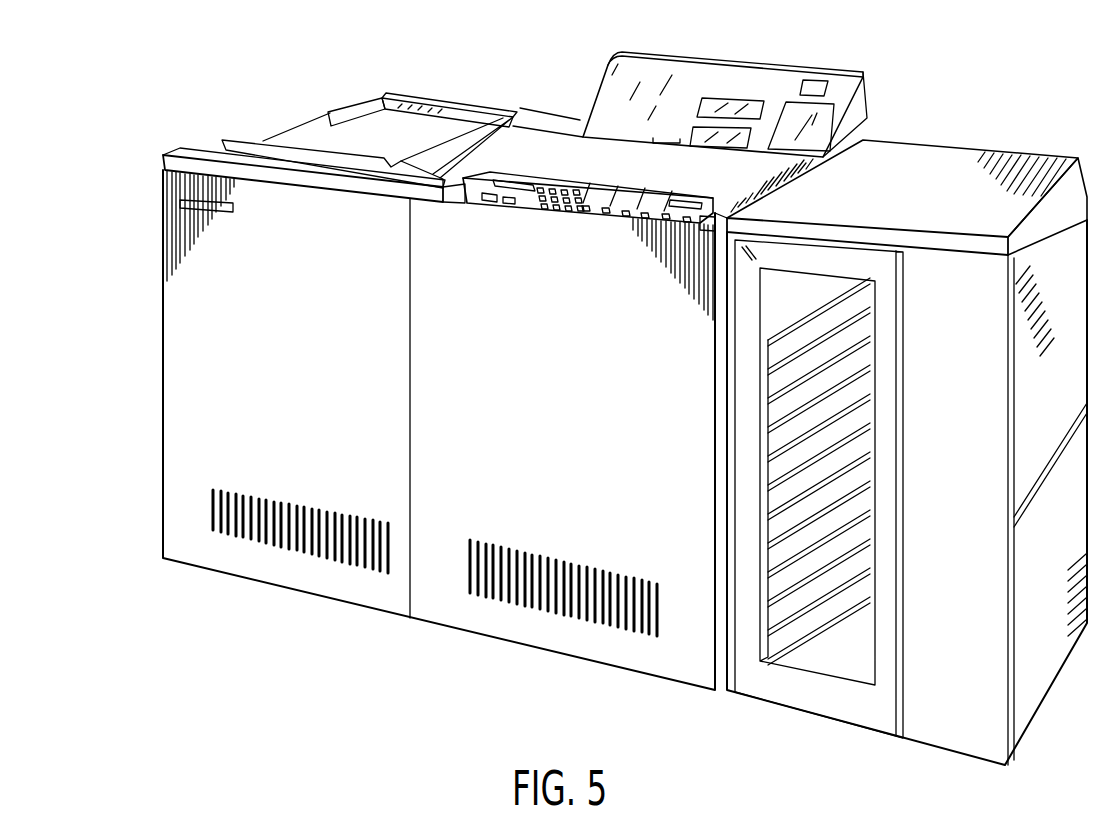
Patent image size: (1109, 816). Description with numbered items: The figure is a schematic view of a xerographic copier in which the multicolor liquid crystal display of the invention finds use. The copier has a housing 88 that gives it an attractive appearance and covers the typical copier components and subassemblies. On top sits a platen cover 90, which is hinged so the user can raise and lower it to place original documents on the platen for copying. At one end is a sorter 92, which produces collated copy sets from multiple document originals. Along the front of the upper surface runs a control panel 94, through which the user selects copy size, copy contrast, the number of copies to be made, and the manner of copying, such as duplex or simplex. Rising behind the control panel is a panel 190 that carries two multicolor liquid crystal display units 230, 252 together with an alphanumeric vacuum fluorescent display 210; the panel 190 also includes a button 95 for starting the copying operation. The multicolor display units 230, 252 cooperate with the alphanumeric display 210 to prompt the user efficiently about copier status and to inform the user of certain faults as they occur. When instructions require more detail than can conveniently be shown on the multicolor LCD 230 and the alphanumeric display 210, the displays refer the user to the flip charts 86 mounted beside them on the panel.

The flip charts 86 is at (602, 88).
The housing 88 is at (427, 326).
The platen cover 90 is at (307, 135).
The sorter 92 is at (997, 407).
The control panel 94 is at (575, 215).
The button 95 is at (813, 83).
The panel 190 is at (741, 99).
The alphanumeric vacuum fluorescent display 210 is at (707, 98).
The multicolor liquid crystal display unit 230 is at (822, 127).
The multicolor liquid crystal display unit 252 is at (720, 143).